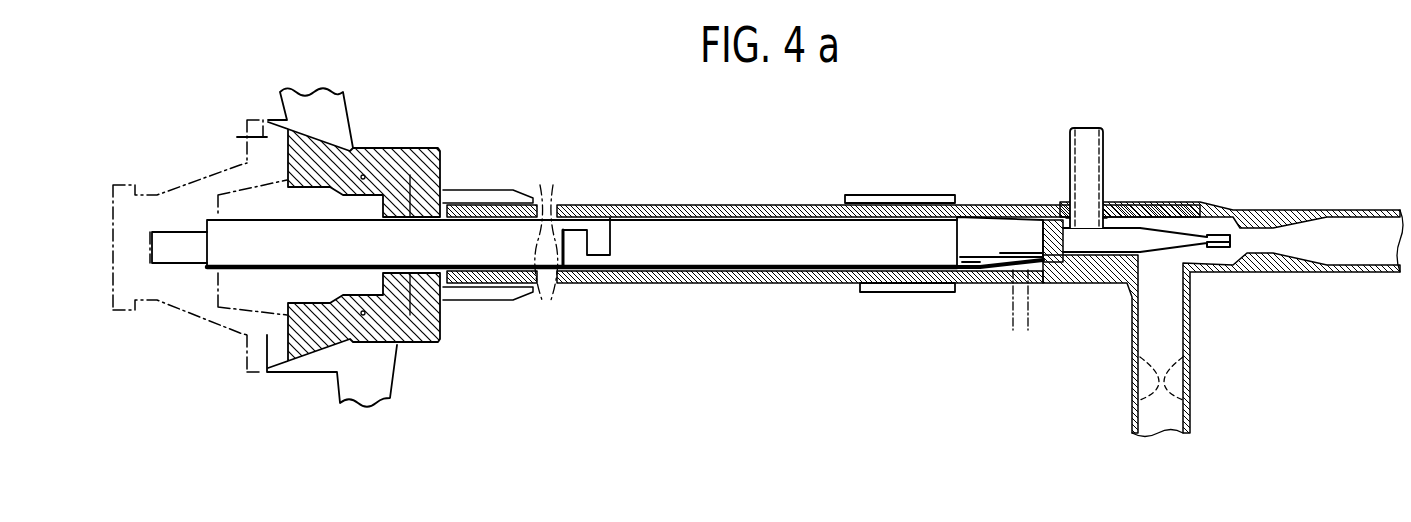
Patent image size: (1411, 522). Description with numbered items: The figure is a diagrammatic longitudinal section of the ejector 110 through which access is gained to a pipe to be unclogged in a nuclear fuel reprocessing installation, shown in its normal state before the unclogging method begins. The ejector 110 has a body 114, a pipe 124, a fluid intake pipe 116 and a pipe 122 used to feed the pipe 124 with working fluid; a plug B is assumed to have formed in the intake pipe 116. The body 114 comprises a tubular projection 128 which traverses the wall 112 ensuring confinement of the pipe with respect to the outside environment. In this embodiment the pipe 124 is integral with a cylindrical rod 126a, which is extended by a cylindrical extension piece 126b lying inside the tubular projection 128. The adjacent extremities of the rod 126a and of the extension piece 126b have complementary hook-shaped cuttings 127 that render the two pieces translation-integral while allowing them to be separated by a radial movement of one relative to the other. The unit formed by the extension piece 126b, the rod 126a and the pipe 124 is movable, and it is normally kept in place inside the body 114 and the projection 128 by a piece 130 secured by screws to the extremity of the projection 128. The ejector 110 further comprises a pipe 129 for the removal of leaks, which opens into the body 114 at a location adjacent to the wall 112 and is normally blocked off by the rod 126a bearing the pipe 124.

The ejector 110 is at (1203, 157).
The wall 112 is at (735, 168).
The body 114 is at (1280, 272).
The fluid intake pipe 116 is at (1188, 413).
The pipe 122 is at (1103, 143).
The pipe 124 is at (1287, 185).
The cylindrical rod 126a is at (707, 250).
The cylindrical extension piece 126b is at (477, 242).
The hook-shaped cuttings 127 is at (615, 253).
The tubular projection 128 is at (932, 193).
The pipe for the removal of leaks 129 is at (1010, 318).
The piece 130 is at (197, 320).
The plug B is at (1150, 383).